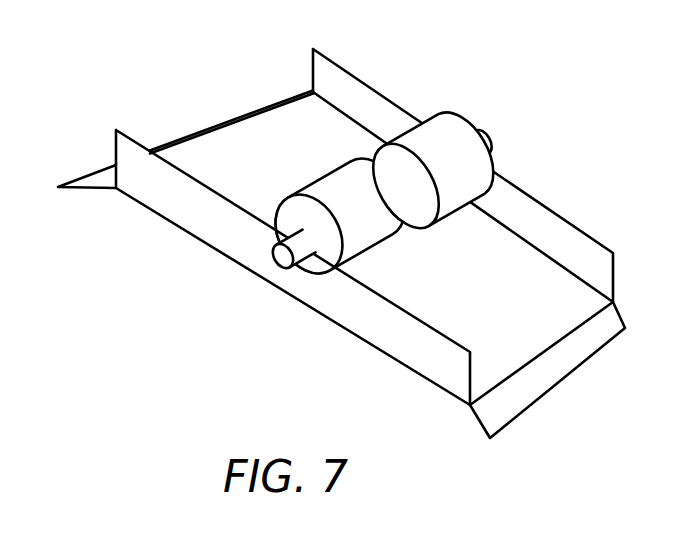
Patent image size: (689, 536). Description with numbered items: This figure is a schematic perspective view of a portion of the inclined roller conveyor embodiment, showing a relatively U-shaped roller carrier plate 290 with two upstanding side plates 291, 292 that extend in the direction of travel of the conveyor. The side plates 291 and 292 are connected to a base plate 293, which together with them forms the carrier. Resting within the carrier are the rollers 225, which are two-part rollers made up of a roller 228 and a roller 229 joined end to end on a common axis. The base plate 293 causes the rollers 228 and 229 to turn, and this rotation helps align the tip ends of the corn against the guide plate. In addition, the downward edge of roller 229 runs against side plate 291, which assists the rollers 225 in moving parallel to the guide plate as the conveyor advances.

The rollers 225 is at (390, 172).
The roller 228 is at (448, 128).
The roller 229 is at (380, 230).
The roller carrier plate 290 is at (210, 220).
The side plate 291 is at (162, 185).
The side plate 292 is at (346, 85).
The base plate 293 is at (248, 130).